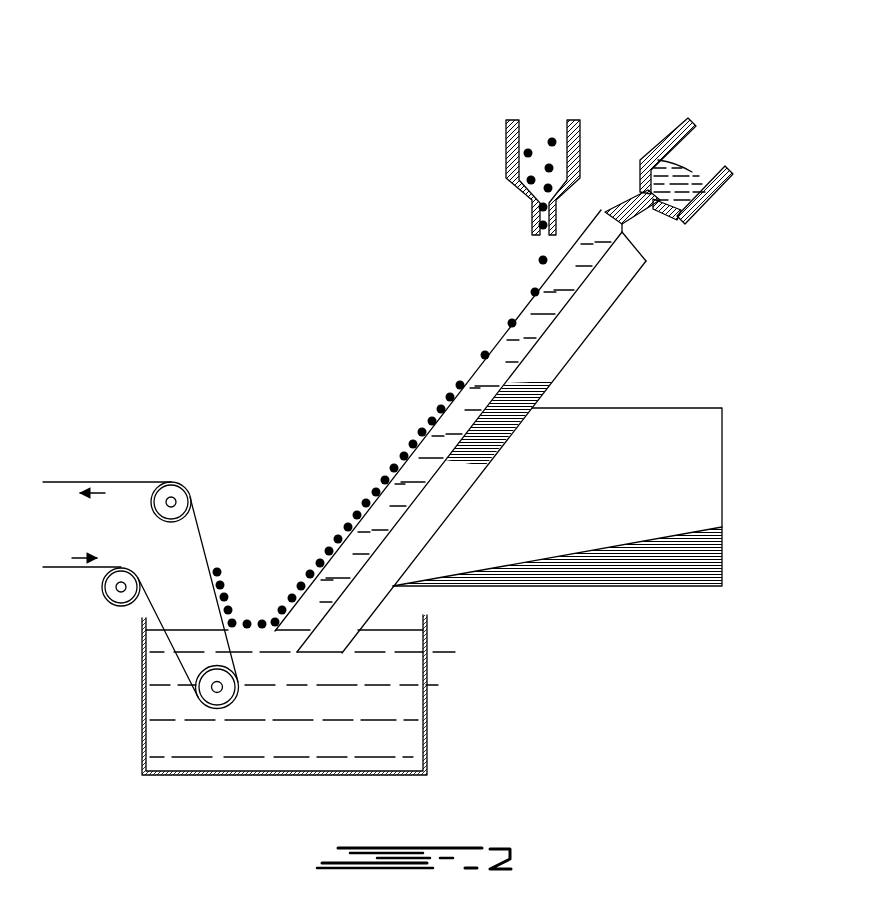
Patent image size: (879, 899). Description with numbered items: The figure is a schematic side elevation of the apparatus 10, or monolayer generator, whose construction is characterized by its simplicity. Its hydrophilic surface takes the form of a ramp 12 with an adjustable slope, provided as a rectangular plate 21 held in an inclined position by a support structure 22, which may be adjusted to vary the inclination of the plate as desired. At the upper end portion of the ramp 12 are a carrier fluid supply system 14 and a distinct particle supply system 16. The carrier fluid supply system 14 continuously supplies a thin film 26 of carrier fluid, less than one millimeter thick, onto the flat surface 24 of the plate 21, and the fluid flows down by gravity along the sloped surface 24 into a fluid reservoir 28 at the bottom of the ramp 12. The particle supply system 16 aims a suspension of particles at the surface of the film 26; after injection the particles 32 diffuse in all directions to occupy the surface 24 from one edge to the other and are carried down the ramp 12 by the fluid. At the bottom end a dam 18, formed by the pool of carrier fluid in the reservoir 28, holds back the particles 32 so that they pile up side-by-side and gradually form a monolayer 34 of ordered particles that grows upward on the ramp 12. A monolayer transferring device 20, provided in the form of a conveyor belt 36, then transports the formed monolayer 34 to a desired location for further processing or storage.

The apparatus 10 is at (312, 300).
The ramp 12 is at (628, 319).
The carrier fluid supply system 14 is at (712, 135).
The particle supply system 16 is at (554, 112).
The dam 18 is at (270, 652).
The monolayer transferring device 20 is at (188, 466).
The rectangular plate 21 is at (550, 363).
The support structure 22 is at (597, 542).
The flat surface 24 is at (418, 488).
The thin film 26 is at (586, 262).
The fluid reservoir 28 is at (427, 692).
The particles 32 is at (510, 323).
The monolayer 34 is at (330, 545).
The conveyor belt 36 is at (93, 482).